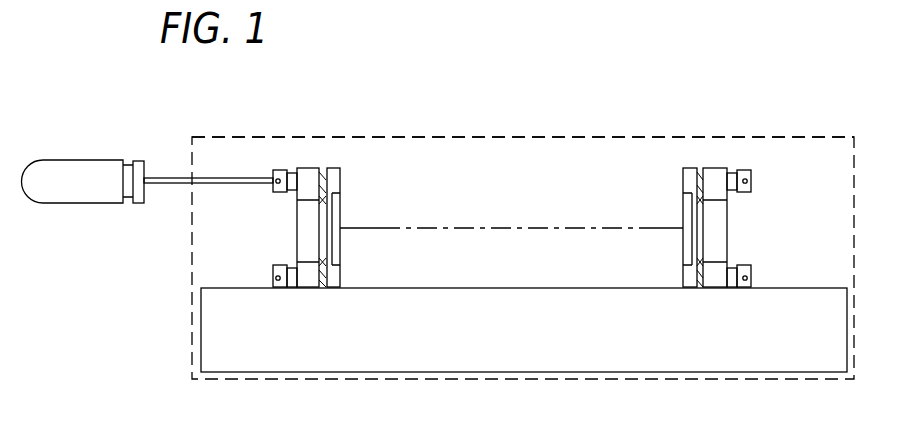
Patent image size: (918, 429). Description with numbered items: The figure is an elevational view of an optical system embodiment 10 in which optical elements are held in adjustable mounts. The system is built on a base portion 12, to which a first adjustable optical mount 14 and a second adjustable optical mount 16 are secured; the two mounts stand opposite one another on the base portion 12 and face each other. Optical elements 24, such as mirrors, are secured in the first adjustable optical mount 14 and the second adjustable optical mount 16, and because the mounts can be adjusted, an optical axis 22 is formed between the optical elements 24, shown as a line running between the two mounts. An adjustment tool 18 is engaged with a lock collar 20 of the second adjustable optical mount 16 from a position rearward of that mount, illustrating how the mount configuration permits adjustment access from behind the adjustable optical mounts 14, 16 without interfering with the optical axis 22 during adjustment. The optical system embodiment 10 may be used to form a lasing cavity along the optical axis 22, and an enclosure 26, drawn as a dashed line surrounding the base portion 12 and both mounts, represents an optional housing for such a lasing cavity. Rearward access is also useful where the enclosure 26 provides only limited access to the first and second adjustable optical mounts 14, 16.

The optical system embodiment 10 is at (537, 125).
The base portion 12 is at (524, 330).
The first adjustable optical mount 14 is at (715, 168).
The second adjustable optical mount 16 is at (310, 168).
The adjustment tool 18 is at (90, 170).
The lock collar 20 is at (281, 168).
The optical axis 22 is at (509, 228).
The optical elements 24 is at (338, 253).
The enclosure 26 is at (668, 137).